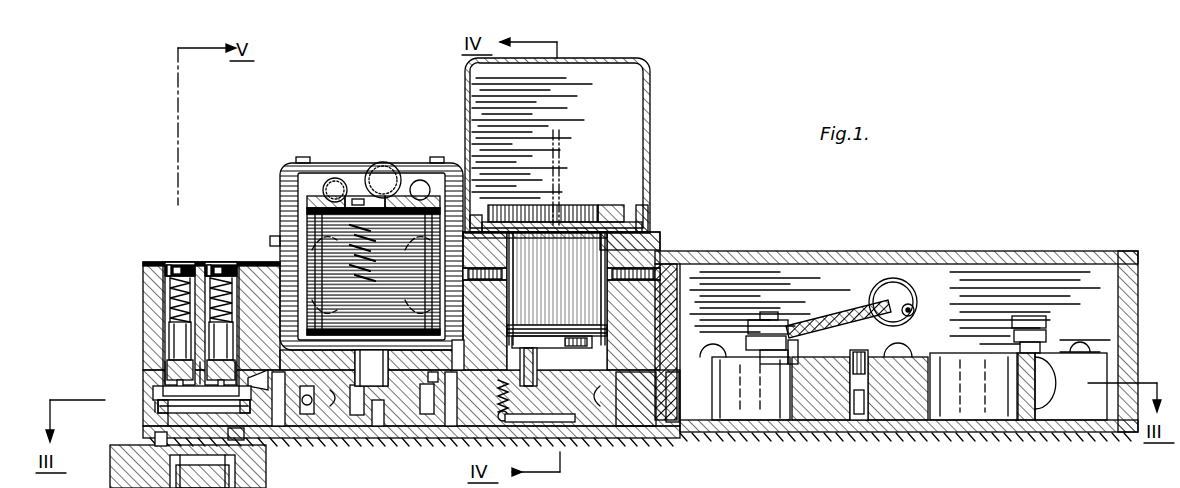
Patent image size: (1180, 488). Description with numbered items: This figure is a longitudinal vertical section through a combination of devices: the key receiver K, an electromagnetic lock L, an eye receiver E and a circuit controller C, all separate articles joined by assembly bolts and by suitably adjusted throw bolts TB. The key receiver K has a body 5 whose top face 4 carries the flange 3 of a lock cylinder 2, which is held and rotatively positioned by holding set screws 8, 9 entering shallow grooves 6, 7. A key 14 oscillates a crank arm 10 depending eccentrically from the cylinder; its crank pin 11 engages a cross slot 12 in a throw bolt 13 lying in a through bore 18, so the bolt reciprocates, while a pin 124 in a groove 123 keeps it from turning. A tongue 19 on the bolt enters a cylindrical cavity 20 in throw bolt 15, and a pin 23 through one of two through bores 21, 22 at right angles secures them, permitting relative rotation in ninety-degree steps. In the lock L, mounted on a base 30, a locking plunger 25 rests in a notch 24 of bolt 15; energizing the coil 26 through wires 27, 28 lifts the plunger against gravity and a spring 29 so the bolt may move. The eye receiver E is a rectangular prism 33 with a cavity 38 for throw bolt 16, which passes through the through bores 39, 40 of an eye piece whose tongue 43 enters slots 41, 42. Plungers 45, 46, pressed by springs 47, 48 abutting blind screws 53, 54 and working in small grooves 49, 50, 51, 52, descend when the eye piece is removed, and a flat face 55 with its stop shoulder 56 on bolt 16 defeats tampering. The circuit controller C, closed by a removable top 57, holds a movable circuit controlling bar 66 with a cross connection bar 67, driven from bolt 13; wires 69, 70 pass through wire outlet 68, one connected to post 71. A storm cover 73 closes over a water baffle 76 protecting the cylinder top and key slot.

The lock cylinder 2 is at (658, 242).
The flange 3 is at (616, 206).
The top face 4 is at (648, 229).
The body 5 is at (621, 250).
The shallow groove 6 is at (600, 282).
The shallow groove 7 is at (513, 292).
The holding set screw 8 is at (633, 295).
The holding set screw 9 is at (485, 264).
The crank arm 10 is at (581, 330).
The crank pin 11 is at (568, 347).
The cross slot 12 is at (532, 350).
The throw bolt 13 is at (628, 368).
The key 14 is at (553, 163).
The throw bolt 15 is at (335, 400).
The throw bolt 16 is at (164, 410).
The through bore 18 is at (673, 410).
The tongue 19 is at (485, 301).
The cylindrical cavity 20 is at (454, 350).
The through bore 21 is at (427, 416).
The through bore 22 is at (432, 430).
The pin 23 is at (449, 426).
The notch 24 is at (354, 418).
The locking plunger 25 is at (371, 368).
The coil 26 is at (306, 238).
The wire 27 is at (384, 168).
The wire 28 is at (334, 178).
The spring 29 is at (422, 179).
The base 30 is at (309, 414).
The rectangular prism 33 is at (143, 297).
The cavity 38 is at (153, 389).
The through bore 39 is at (169, 385).
The through bore 40 is at (250, 375).
The slot 41 is at (160, 437).
The slot 42 is at (236, 436).
The tongue 43 is at (166, 444).
The plunger 45 is at (173, 335).
The plunger 46 is at (226, 326).
The spring 47 is at (151, 274).
The spring 48 is at (223, 278).
The small groove 49 is at (163, 374).
The small groove 50 is at (166, 399).
The small groove 51 is at (222, 328).
The small groove 52 is at (225, 383).
The blind screw 53 is at (170, 263).
The blind screw 54 is at (212, 263).
The flat face 55 is at (154, 403).
The stop shoulder 56 is at (200, 397).
The top 57 is at (842, 250).
The movable circuit controlling bar 66 is at (930, 358).
The cross connection bar 67 is at (860, 354).
The wire outlet 68 is at (895, 283).
The wire 69 is at (914, 308).
The wire 70 is at (828, 330).
The post 71 is at (766, 314).
The storm cover 73 is at (650, 126).
The water baffle 76 is at (644, 214).
The groove 123 is at (512, 404).
The pin 124 is at (560, 390).
The key receiver K is at (630, 88).
The electromagnetic lock L is at (351, 150).
The eye receiver E is at (230, 256).
The circuit controller C is at (962, 246).
The throw bolts TB is at (282, 426).